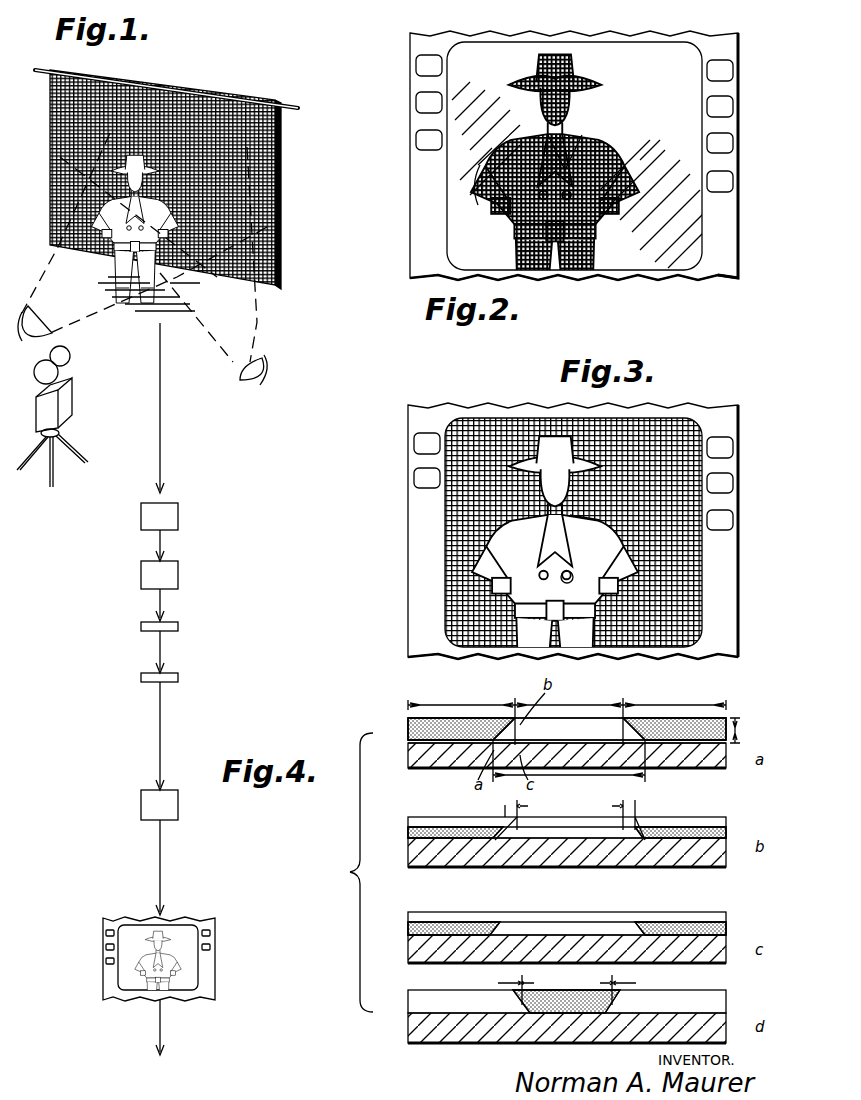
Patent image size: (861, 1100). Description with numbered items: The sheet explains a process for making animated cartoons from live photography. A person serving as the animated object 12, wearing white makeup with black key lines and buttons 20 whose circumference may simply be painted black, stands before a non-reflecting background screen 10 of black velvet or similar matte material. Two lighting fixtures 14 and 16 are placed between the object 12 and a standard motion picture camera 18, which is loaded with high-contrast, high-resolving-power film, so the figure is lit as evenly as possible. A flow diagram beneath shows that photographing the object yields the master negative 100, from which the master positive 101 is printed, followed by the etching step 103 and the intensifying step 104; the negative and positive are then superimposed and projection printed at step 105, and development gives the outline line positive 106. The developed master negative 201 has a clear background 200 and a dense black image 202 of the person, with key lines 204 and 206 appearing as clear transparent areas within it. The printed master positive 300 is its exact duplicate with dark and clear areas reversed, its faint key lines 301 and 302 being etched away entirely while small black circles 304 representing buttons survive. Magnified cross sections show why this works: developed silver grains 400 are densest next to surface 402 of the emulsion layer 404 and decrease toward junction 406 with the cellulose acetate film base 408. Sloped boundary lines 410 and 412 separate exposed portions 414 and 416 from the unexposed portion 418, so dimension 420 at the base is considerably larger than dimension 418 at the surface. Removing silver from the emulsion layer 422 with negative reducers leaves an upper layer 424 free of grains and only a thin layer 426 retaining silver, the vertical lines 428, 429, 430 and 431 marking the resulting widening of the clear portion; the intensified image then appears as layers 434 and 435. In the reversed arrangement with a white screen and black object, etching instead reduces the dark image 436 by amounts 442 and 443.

In FIG. 1, the non-reflecting background screen 10 is at (262, 143).
In FIG. 1, the animated object 12 is at (112, 278).
In FIG. 1, the lighting fixture 14 is at (243, 378).
In FIG. 1, the lighting fixture 16 is at (28, 340).
In FIG. 1, the motion picture camera 18 is at (70, 395).
In FIG. 1, the buttons 20 is at (60, 157).
In FIG. 1, the master negative 100 is at (178, 518).
In FIG. 1, the master positive 101 is at (178, 575).
In FIG. 1, the etching step 103 is at (178, 628).
In FIG. 1, the intensifying step 104 is at (178, 679).
In FIG. 1, the superimposing and printing step 105 is at (150, 805).
In FIG. 1, the outline line positive 106 is at (210, 975).
In FIG. 2, the background 200 is at (468, 64).
In FIG. 2, the master negative 201 is at (420, 215).
In FIG. 2, the image 202 is at (520, 252).
In FIG. 2, the key line 204 is at (580, 140).
In FIG. 2, the key line 206 is at (478, 182).
In FIG. 3, the master positive 300 is at (420, 542).
In FIG. 3, the key line 301 is at (470, 590).
In FIG. 3, the key line 302 is at (600, 520).
In FIG. 3, the black circle 304 is at (575, 577).
In FIG. 4, the developed silver grains 400 is at (452, 709).
In FIG. 4, the surface 402 is at (408, 718).
In FIG. 4, the emulsion layer 404 is at (430, 733).
In FIG. 4, the junction 406 is at (440, 750).
In FIG. 4, the film base 408 is at (692, 765).
In FIG. 4, the boundary line 410 is at (488, 730).
In FIG. 4, the boundary line 412 is at (630, 728).
In FIG. 4, the exposed portion 414 is at (488, 705).
In FIG. 4, the exposed portion 416 is at (685, 695).
In FIG. 4, the unexposed portion 418 is at (569, 712).
In FIG. 4, the dimension 420 is at (545, 773).
In FIG. 4, the emulsion layer 422 is at (738, 725).
In FIG. 4, the upper layer 424 is at (440, 820).
In FIG. 4, the thin layer 426 is at (415, 833).
In FIG. 4, the vertical line 428 is at (538, 813).
In FIG. 4, the vertical line 429 is at (505, 810).
In FIG. 4, the vertical line 430 is at (603, 813).
In FIG. 4, the vertical line 431 is at (636, 806).
In FIG. 4, the intensified image layer 434 is at (458, 906).
In FIG. 4, the intensified image layer 435 is at (678, 930).
In FIG. 4, the dark image 436 is at (588, 990).
In FIG. 4, the reduction amount 442 is at (512, 982).
In FIG. 4, the reduction amount 443 is at (625, 982).